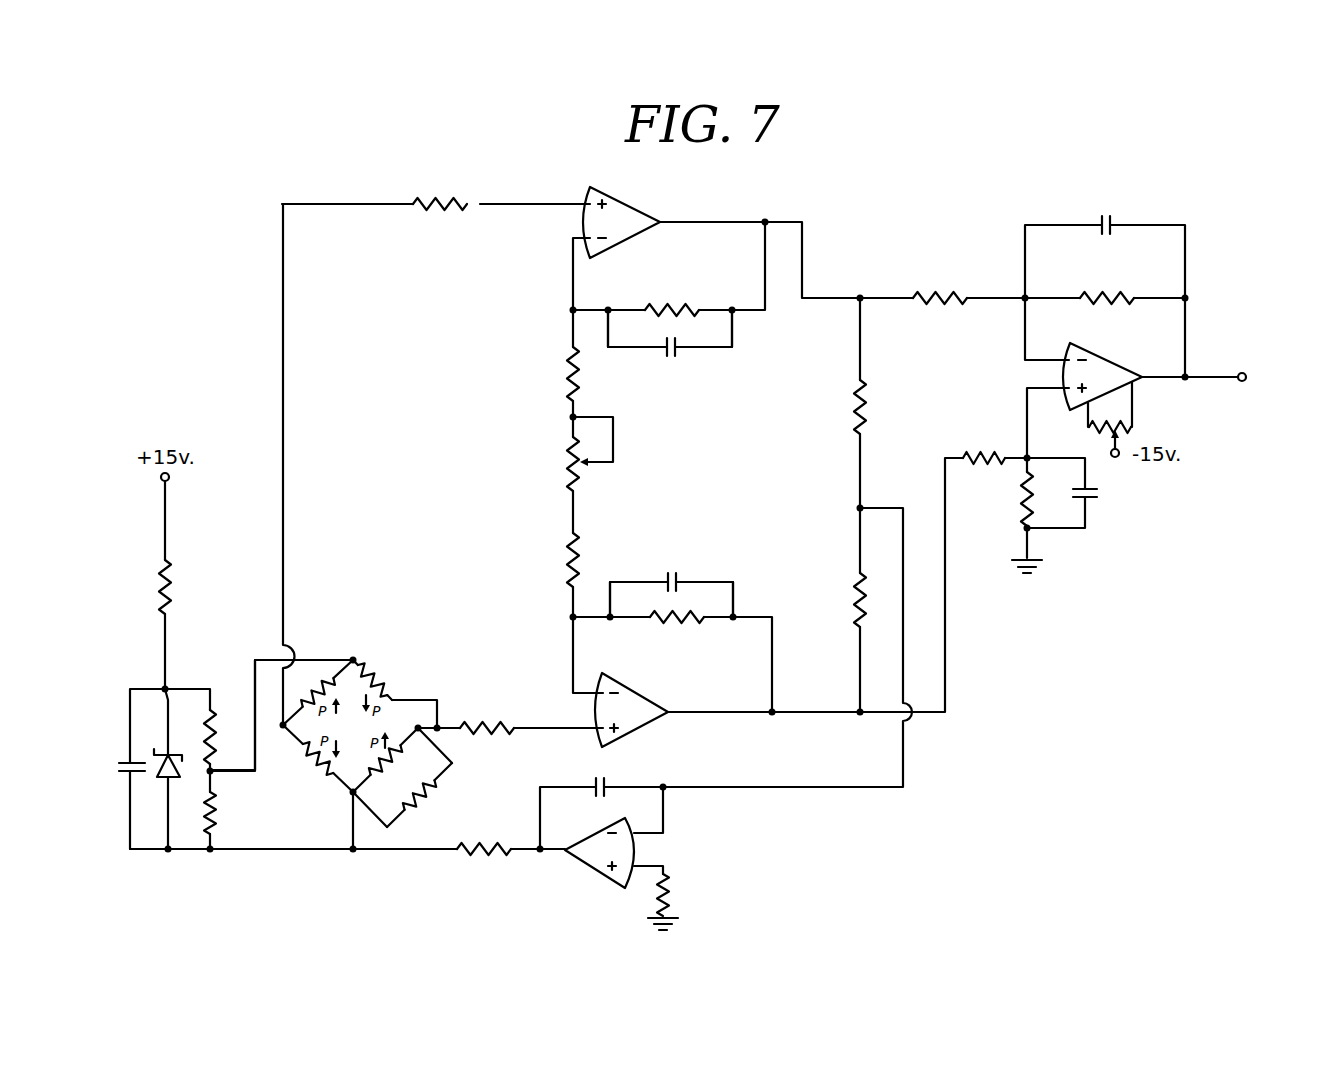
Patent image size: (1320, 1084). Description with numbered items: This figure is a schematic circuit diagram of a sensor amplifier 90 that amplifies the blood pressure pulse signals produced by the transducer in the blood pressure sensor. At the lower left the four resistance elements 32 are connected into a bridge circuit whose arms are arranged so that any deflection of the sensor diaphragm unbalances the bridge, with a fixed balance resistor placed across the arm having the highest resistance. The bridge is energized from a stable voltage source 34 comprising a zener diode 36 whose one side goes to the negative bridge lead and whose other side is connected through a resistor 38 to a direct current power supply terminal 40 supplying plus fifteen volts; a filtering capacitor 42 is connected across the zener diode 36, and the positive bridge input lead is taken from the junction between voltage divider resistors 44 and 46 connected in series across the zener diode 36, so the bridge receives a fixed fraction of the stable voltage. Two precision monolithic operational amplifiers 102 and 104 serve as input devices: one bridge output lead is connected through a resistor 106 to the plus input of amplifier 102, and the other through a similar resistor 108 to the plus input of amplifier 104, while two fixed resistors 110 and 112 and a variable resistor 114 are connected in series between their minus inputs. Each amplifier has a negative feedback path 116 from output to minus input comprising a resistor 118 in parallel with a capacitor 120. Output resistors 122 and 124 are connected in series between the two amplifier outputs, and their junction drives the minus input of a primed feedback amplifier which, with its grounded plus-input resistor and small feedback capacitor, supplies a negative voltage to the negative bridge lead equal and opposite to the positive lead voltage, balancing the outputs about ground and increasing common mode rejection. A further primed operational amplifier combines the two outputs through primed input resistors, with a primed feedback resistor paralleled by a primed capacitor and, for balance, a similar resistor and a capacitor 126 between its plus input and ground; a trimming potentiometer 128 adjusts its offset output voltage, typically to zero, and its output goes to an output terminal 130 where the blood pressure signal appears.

The resistance elements / bridge circuit 32 is at (285, 492).
The stable voltage source 34 is at (180, 857).
The zener diode 36 is at (164, 782).
The resistor 38 is at (158, 590).
The direct current power supply terminal 40 is at (160, 480).
The filtering capacitor 42 is at (116, 773).
The voltage divider resistor 44 is at (216, 816).
The voltage divider resistor 46 is at (216, 746).
The sensor amplifier 90 is at (1173, 183).
The operational amplifier 102 is at (641, 730).
The operational amplifier 104 is at (632, 197).
The resistor 106 is at (488, 735).
The resistor 108 is at (441, 222).
The fixed resistor 110 is at (567, 376).
The fixed resistor 112 is at (567, 552).
The variable resistor 114 is at (594, 470).
The negative feedback path 116 is at (736, 316).
The resistor 118 is at (672, 305).
The capacitor 120 is at (673, 378).
The output resistor 122 is at (856, 596).
The output resistor 124 is at (852, 405).
The capacitor 126 is at (1100, 495).
The trimming potentiometer 128 is at (1122, 428).
The output terminal 130 is at (1244, 382).